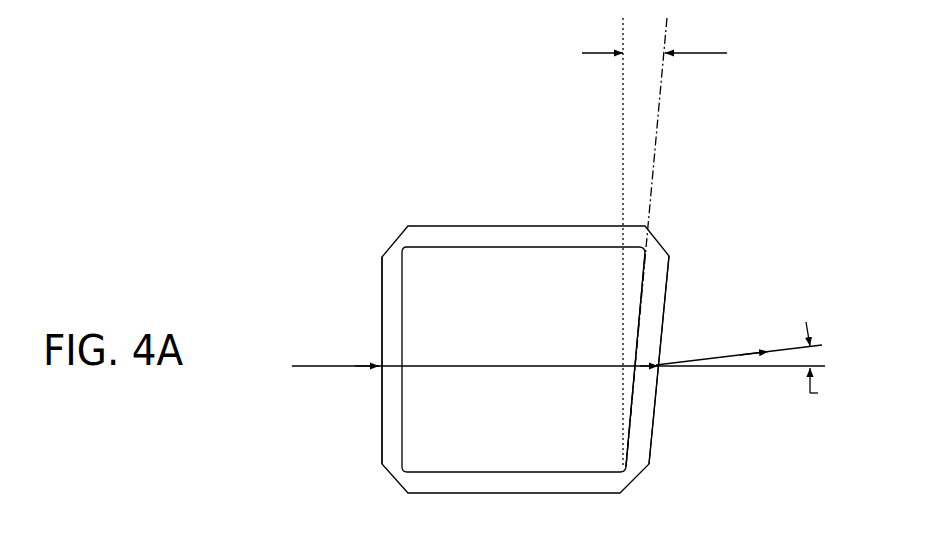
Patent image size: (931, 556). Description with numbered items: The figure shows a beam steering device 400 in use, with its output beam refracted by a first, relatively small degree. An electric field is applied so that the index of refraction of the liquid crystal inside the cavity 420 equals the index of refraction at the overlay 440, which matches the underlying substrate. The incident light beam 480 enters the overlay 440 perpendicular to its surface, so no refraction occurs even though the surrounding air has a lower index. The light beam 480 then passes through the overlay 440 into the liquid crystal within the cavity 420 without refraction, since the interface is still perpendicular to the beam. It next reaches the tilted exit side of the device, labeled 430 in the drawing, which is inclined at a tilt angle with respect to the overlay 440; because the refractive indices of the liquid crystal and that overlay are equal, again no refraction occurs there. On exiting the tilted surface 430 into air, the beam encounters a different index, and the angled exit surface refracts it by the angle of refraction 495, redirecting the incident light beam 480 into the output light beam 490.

The beam steering device 400 is at (348, 190).
The cavity 420 is at (593, 285).
The exit surface 430 is at (653, 357).
The overlay 440 is at (392, 355).
The incident light beam 480 is at (337, 378).
The output light beam 490 is at (705, 350).
The angle of refraction 495 is at (834, 368).